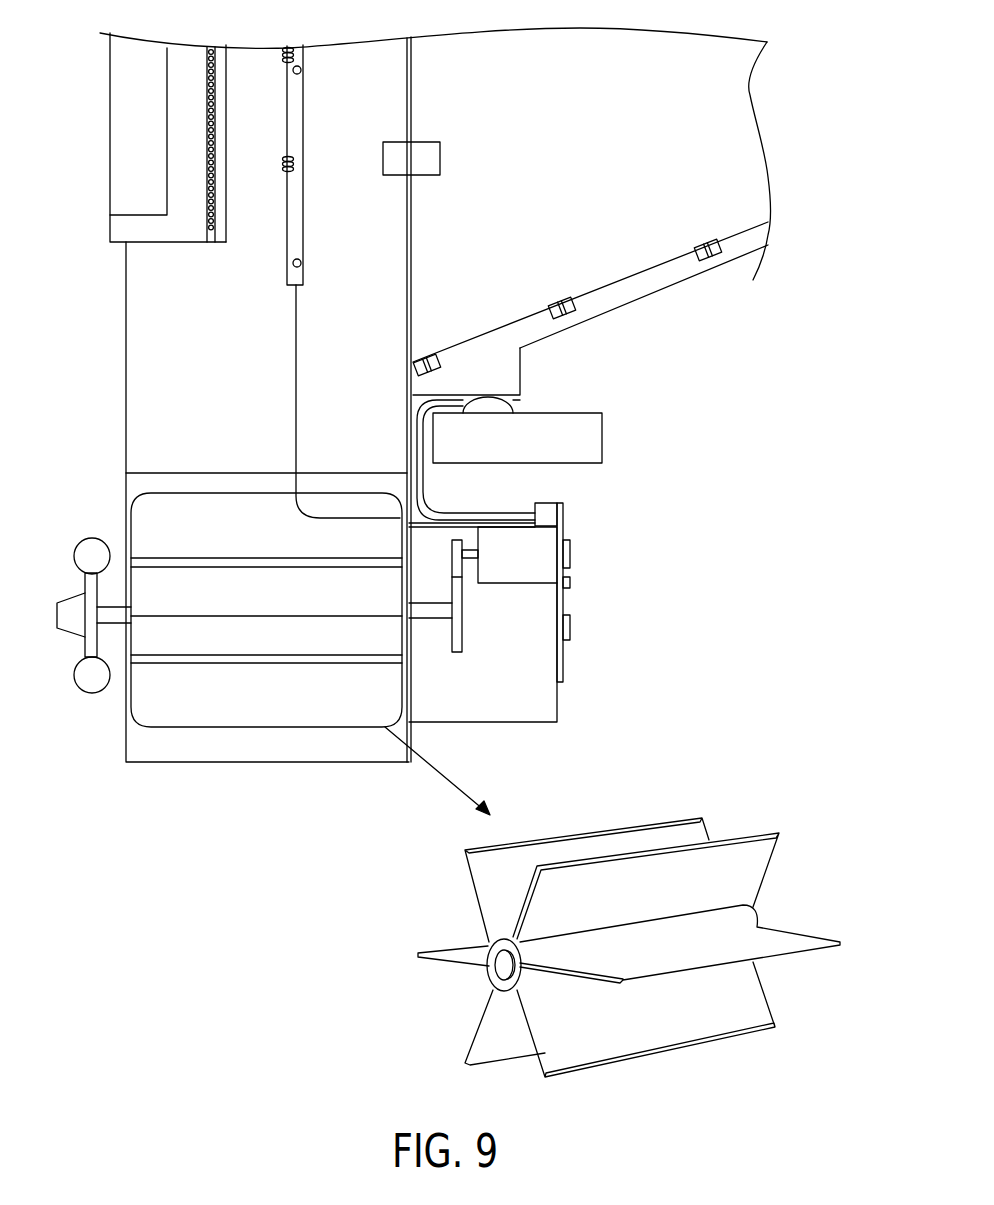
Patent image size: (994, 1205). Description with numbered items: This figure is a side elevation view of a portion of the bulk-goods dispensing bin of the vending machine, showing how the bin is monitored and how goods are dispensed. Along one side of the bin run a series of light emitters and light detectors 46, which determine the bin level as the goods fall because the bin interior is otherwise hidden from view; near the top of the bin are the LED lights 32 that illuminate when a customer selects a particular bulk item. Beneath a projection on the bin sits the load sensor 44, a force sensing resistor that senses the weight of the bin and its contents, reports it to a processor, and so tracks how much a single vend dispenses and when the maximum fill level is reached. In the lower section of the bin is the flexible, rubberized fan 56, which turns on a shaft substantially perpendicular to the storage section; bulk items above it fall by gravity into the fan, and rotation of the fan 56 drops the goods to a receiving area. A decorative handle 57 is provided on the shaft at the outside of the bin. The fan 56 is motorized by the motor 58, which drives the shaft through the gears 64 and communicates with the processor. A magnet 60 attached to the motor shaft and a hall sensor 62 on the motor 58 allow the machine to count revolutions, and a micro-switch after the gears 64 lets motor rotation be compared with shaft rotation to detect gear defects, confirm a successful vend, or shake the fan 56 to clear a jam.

The LED lights 32 is at (214, 46).
The light emitters and light detectors 46 is at (302, 160).
The load sensor 44 is at (512, 402).
The fan 56 is at (165, 518).
The decorative handle 57 is at (70, 593).
The motor 58 is at (543, 541).
The magnet 60 is at (568, 555).
The hall sensor 62 is at (568, 584).
The gears 64 is at (457, 546).